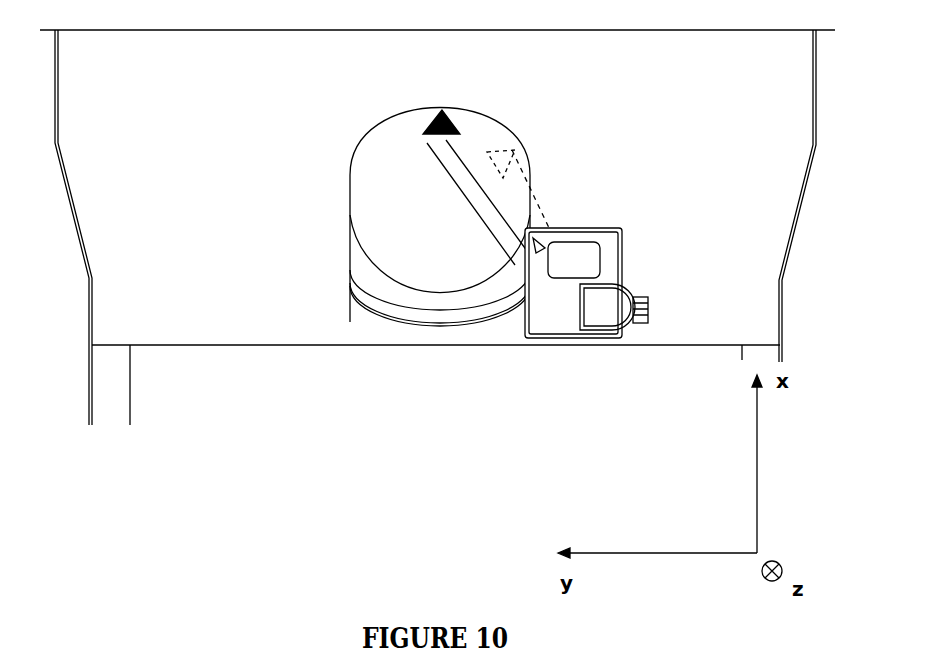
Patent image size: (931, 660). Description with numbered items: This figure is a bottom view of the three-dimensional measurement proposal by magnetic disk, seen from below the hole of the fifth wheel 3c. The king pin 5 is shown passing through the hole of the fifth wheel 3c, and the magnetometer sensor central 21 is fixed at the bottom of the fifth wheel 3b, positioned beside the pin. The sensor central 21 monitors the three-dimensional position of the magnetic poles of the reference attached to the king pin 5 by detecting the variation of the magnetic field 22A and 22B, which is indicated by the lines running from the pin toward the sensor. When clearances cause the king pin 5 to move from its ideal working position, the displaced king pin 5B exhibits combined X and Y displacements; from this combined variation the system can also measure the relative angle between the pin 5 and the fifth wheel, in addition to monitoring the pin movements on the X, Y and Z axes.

The bottom of the fifth wheel 3b is at (437, 227).
The hole of the fifth wheel 3c is at (355, 328).
The king pin 5 is at (387, 438).
The king pin displaced position 5B is at (520, 150).
The magnetometer sensor central 21 is at (545, 337).
The magnetic field variation 22A is at (430, 152).
The magnetic field variation 22B is at (533, 193).